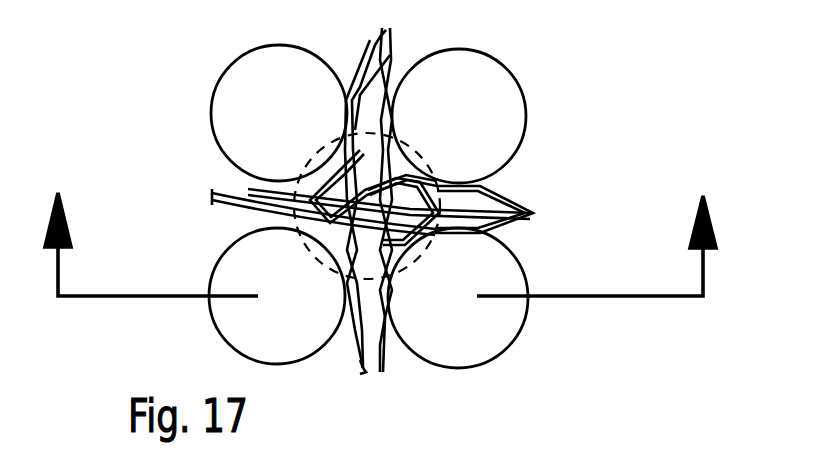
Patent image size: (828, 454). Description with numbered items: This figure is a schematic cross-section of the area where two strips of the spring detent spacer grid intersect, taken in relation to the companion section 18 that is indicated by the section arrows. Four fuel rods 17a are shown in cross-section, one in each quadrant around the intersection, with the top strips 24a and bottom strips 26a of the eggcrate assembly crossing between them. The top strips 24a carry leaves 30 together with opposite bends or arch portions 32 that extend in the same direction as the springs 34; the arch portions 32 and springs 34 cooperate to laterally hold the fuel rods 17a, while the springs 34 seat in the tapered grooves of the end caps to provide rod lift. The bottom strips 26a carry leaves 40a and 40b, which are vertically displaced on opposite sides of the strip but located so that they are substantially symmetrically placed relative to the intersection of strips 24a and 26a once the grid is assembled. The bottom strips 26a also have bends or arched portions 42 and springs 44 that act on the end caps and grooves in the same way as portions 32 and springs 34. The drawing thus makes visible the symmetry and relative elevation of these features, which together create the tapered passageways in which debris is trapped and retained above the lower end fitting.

The fuel rods 17a is at (213, 120).
The FIG. 18 section indication 18 is at (372, 214).
The top strips 24a is at (366, 370).
The bottom strips 26a is at (532, 216).
The leaves 30 is at (383, 60).
The arch portions 32 is at (389, 130).
The springs 34 is at (345, 120).
The leaf 40a is at (315, 165).
The leaf 40b is at (300, 229).
The arched portions 42 is at (250, 190).
The springs 44 is at (240, 236).